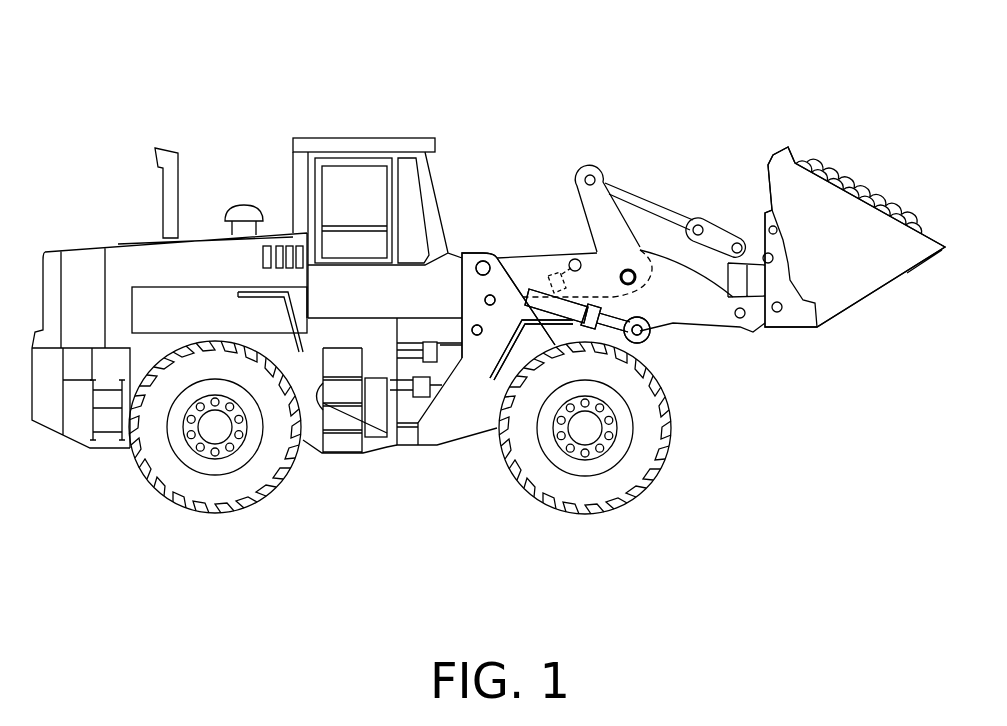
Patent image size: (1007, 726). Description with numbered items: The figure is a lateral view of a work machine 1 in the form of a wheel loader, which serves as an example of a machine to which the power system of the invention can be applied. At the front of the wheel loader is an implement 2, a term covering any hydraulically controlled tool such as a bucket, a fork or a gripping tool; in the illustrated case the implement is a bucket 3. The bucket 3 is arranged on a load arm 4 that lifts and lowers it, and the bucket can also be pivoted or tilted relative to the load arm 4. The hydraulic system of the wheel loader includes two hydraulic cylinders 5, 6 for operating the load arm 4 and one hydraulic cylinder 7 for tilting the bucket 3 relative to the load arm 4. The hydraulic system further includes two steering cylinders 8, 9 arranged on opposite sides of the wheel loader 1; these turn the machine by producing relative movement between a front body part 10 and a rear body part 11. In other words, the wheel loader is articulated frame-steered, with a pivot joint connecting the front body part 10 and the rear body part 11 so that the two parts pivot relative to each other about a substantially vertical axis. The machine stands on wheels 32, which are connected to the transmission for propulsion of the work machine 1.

The work machine 1 is at (365, 112).
The implement 2 is at (892, 155).
The bucket 3 is at (838, 281).
The load arm 4 is at (712, 128).
The hydraulic cylinder 5 is at (607, 333).
The hydraulic cylinder 6 is at (607, 333).
The hydraulic cylinder 7 is at (557, 270).
The steering cylinder 8 is at (447, 362).
The steering cylinder 9 is at (447, 362).
The front body part 10 is at (448, 422).
The rear body part 11 is at (77, 422).
The wheels 32 is at (222, 490).